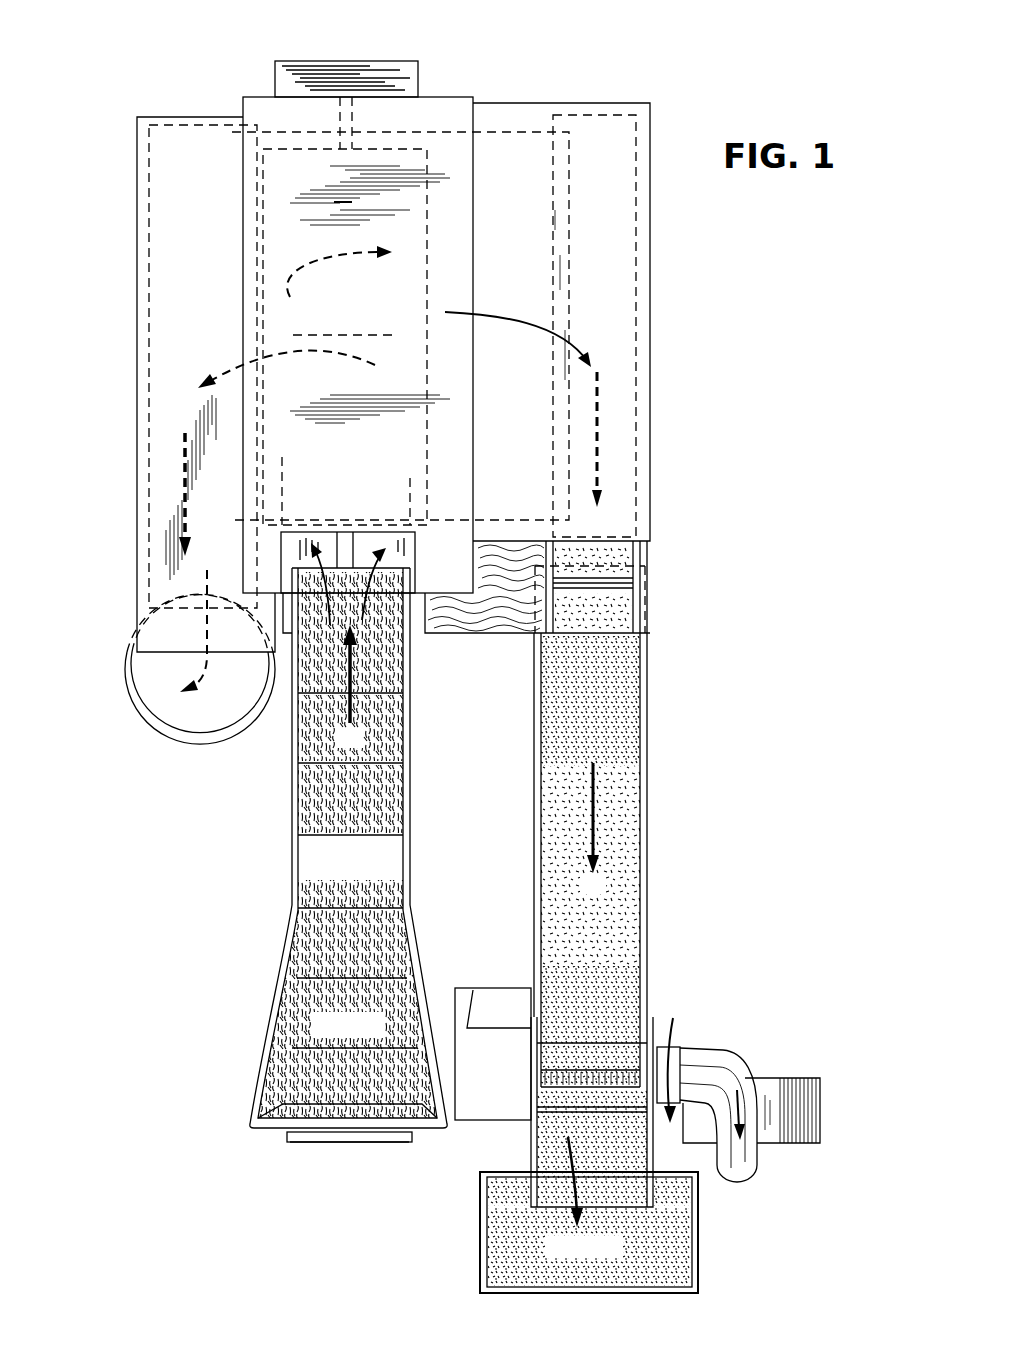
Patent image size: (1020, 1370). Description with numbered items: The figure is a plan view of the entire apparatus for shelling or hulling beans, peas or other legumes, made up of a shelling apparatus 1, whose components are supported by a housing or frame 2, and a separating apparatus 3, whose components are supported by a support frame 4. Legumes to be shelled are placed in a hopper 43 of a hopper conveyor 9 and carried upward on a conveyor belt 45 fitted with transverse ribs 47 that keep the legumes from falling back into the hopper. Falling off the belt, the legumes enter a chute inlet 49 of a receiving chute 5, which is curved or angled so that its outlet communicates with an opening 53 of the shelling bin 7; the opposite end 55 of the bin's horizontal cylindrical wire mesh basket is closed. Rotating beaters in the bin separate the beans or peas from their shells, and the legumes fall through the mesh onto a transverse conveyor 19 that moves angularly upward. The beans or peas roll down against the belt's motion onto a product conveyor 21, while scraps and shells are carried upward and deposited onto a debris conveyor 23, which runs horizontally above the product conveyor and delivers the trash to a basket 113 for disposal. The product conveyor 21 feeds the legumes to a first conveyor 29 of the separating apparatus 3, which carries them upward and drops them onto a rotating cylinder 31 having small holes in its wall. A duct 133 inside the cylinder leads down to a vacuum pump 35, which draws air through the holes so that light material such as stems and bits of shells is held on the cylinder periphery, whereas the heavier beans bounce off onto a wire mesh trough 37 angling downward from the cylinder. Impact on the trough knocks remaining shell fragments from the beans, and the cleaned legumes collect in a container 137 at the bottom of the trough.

The shelling apparatus 1 is at (662, 324).
The housing or frame 2 is at (490, 102).
The separating apparatus 3 is at (680, 820).
The support frame 4 is at (648, 883).
The receiving chute 5 is at (440, 583).
The shelling bin 7 is at (406, 337).
The hopper conveyor 9 is at (292, 893).
The transverse conveyor 19 is at (508, 130).
The product conveyor 21 is at (653, 127).
The debris conveyor 23 is at (147, 143).
The first conveyor 29 is at (617, 916).
The rotating cylinder 31 is at (537, 1093).
The vacuum pump 35 is at (823, 1107).
The wire mesh trough 37 is at (527, 1148).
The hopper 43 is at (250, 1093).
The conveyor belt 45 is at (380, 858).
The ribs 47 is at (377, 694).
The chute inlet 49 is at (281, 540).
The opening of the shelling bin 53 is at (362, 524).
The closed end 55 is at (413, 147).
The basket 113 is at (135, 710).
The duct 133 is at (747, 1177).
The container 137 is at (480, 1245).